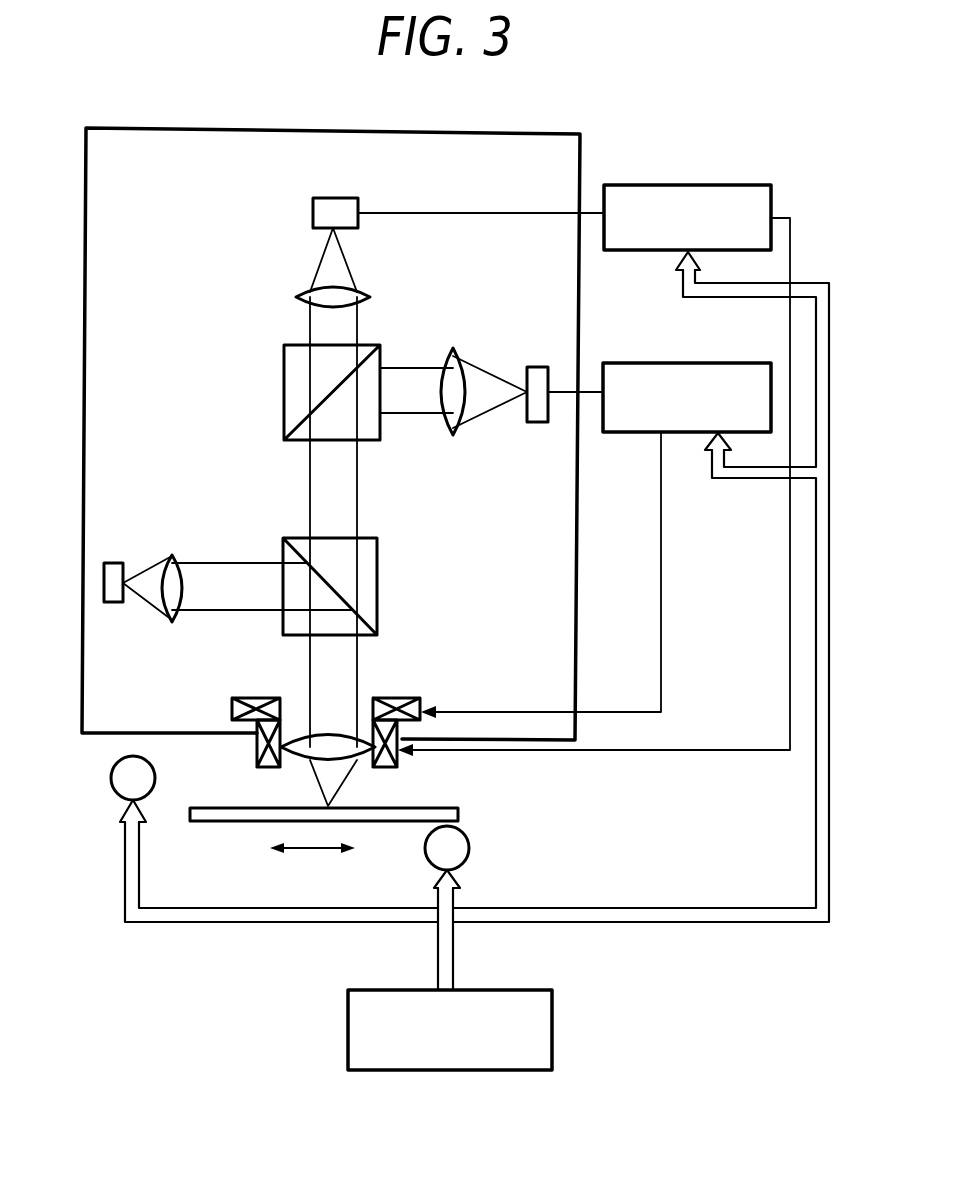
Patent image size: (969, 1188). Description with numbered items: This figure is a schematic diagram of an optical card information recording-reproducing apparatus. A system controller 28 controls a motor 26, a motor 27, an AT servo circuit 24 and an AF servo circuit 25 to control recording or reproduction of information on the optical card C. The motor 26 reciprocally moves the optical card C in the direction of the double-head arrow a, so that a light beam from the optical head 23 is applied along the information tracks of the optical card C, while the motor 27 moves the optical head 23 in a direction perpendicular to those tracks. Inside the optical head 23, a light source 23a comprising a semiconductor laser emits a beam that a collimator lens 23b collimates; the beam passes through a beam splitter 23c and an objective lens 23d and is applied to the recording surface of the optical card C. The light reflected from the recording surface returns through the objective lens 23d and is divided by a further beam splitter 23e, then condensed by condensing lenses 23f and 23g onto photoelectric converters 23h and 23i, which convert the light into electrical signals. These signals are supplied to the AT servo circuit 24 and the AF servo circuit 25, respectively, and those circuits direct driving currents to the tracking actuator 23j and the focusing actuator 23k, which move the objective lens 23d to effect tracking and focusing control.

The optical head 23 is at (222, 128).
The light source 23a is at (113, 563).
The collimator lens 23b is at (174, 556).
The beam splitter 23c is at (286, 540).
The objective lens 23d is at (335, 735).
The beam splitter 23e is at (284, 378).
The condensing lens 23f is at (454, 350).
The condensing lens 23g is at (298, 296).
The photoelectric converter 23h is at (538, 367).
The photoelectric converter 23i is at (320, 198).
The tracking actuator 23j is at (420, 700).
The focusing actuator 23k is at (397, 765).
The AT servo circuit 24 is at (658, 363).
The AF servo circuit 25 is at (680, 185).
The motor 26 is at (469, 850).
The motor 27 is at (155, 783).
The system controller 28 is at (552, 1022).
The optical card C is at (222, 822).
The double-head arrow a is at (312, 858).